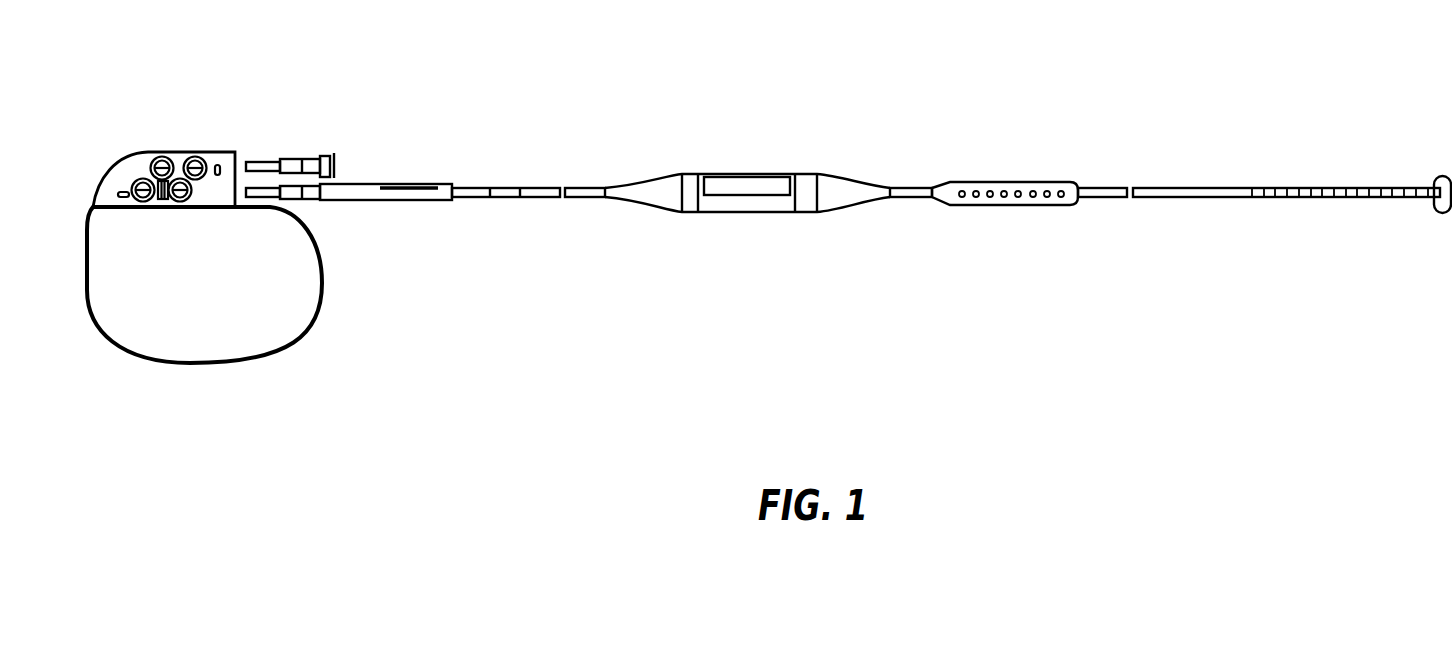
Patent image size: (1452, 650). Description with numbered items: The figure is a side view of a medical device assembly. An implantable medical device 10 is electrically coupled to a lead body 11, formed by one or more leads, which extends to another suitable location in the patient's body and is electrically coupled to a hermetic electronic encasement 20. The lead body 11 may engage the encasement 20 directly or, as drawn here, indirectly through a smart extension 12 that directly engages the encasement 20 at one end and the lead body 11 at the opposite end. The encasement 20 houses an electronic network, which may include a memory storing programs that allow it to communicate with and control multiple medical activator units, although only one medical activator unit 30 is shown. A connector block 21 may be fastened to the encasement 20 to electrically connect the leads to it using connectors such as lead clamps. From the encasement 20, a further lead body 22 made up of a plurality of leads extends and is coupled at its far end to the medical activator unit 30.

The medical device 10 is at (232, 293).
The lead body 11 is at (312, 196).
The smart extension 12 is at (587, 198).
The hermetic electronic encasement 20 is at (738, 187).
The connector block 21 is at (1003, 200).
The lead body 22 is at (1207, 187).
The medical activator unit 30 is at (1445, 175).